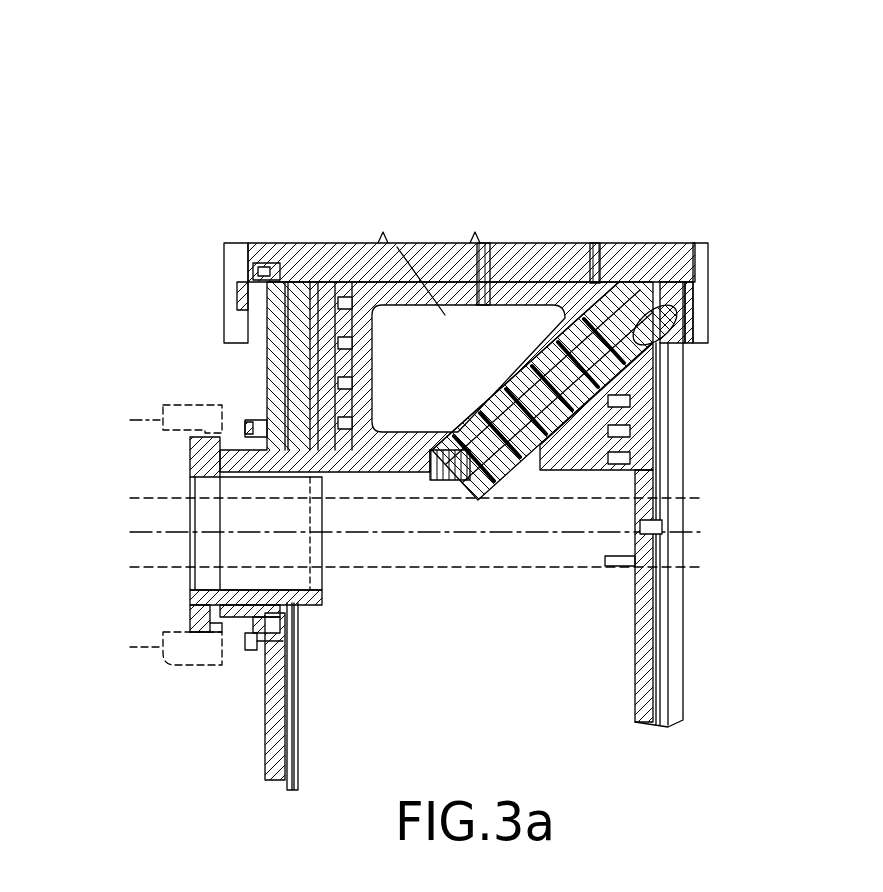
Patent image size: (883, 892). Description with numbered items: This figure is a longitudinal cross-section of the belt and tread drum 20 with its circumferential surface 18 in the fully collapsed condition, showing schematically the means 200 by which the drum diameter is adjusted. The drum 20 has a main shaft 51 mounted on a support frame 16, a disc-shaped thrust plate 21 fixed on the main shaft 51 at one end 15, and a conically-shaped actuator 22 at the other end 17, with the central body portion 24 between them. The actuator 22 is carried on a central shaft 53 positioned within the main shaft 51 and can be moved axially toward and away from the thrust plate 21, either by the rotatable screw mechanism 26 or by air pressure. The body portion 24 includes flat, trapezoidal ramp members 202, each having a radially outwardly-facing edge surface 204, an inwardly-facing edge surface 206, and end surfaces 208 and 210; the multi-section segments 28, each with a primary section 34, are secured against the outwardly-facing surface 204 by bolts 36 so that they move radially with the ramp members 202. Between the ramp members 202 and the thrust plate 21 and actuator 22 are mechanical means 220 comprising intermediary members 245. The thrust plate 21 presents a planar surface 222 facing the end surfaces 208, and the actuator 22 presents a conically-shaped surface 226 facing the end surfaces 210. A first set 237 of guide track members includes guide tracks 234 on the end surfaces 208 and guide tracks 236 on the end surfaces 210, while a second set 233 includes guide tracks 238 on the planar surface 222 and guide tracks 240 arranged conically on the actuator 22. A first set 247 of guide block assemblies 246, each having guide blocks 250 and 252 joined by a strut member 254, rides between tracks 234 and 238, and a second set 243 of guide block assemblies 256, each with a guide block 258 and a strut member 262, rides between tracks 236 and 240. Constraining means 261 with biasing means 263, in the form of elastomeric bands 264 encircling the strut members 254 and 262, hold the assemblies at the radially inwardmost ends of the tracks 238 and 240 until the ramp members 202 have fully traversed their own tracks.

The belt and tread drum 20 is at (568, 91).
The mechanical means 220 is at (702, 102).
The guide tracks 236 is at (660, 243).
The second set of guide block assemblies 243 is at (303, 160).
The intermediary members 245 is at (763, 187).
The constraining means 261 is at (200, 218).
The biasing means 263 is at (190, 239).
The one end of the drum 15 is at (213, 243).
The guide block assembly 246 is at (312, 300).
The elastomeric bands 264 is at (345, 290).
The guide block 252 is at (350, 247).
The central body portion 24 is at (445, 250).
The circumferential surface 18 is at (458, 250).
The multi-section segments 28 is at (503, 245).
The primary section 34 is at (533, 245).
The ramp members 202 is at (525, 248).
The bolts 36 is at (600, 243).
The other end of the drum 17 is at (708, 247).
The first set of guide block assemblies 247 is at (738, 264).
The guide tracks 238 is at (260, 273).
The planar surface 222 is at (275, 322).
The thrust plate 21 is at (267, 387).
The support frame 16 is at (148, 418).
The guide block 250 is at (228, 488).
The strut member 254 is at (350, 343).
The end surface 208 is at (373, 395).
The end surface 210 is at (488, 404).
The radially outwardly-facing edge surface 204 is at (550, 272).
The guide block assembly 256 is at (650, 328).
The first set of guide track members 237 is at (719, 406).
The means for moving the segments 200 is at (718, 448).
The strut member 262 is at (658, 478).
The actuator 22 is at (690, 450).
The second set of guide track members 233 is at (719, 551).
The conically-shaped surface 226 is at (663, 527).
The rotatable screw mechanism 26 is at (685, 585).
The guide block 258 is at (528, 450).
The central shaft 53 is at (530, 567).
The radially inwardly-facing edge surface 206 is at (383, 457).
The guide tracks 240 is at (535, 440).
The guide tracks 234 is at (300, 452).
The main shaft 51 is at (292, 663).